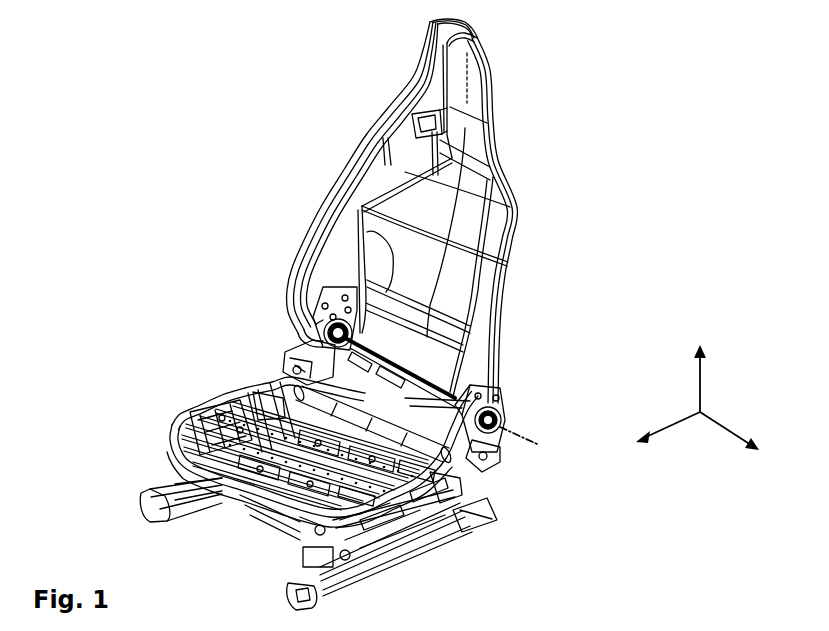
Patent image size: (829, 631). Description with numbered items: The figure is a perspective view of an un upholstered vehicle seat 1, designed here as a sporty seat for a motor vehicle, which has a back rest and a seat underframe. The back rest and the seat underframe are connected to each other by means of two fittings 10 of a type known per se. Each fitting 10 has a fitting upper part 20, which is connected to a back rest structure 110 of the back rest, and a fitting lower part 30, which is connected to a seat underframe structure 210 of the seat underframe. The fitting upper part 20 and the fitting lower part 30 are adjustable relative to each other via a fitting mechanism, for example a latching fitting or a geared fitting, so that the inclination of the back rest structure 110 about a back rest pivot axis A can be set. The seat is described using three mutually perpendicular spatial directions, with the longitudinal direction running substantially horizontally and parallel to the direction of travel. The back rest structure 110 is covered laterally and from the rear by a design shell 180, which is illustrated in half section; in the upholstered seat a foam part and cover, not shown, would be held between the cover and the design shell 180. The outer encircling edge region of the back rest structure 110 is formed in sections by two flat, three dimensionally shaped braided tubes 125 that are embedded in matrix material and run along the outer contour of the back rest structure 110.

The vehicle seat 1 is at (632, 108).
The fitting 10 is at (317, 338).
The fitting upper part 20 is at (290, 302).
The fitting lower part 30 is at (290, 363).
The back rest structure 110 is at (515, 203).
The braided tube 125 is at (490, 69).
The design shell 180 is at (420, 138).
The seat underframe structure 210 is at (197, 422).
The back rest pivot axis A is at (512, 434).